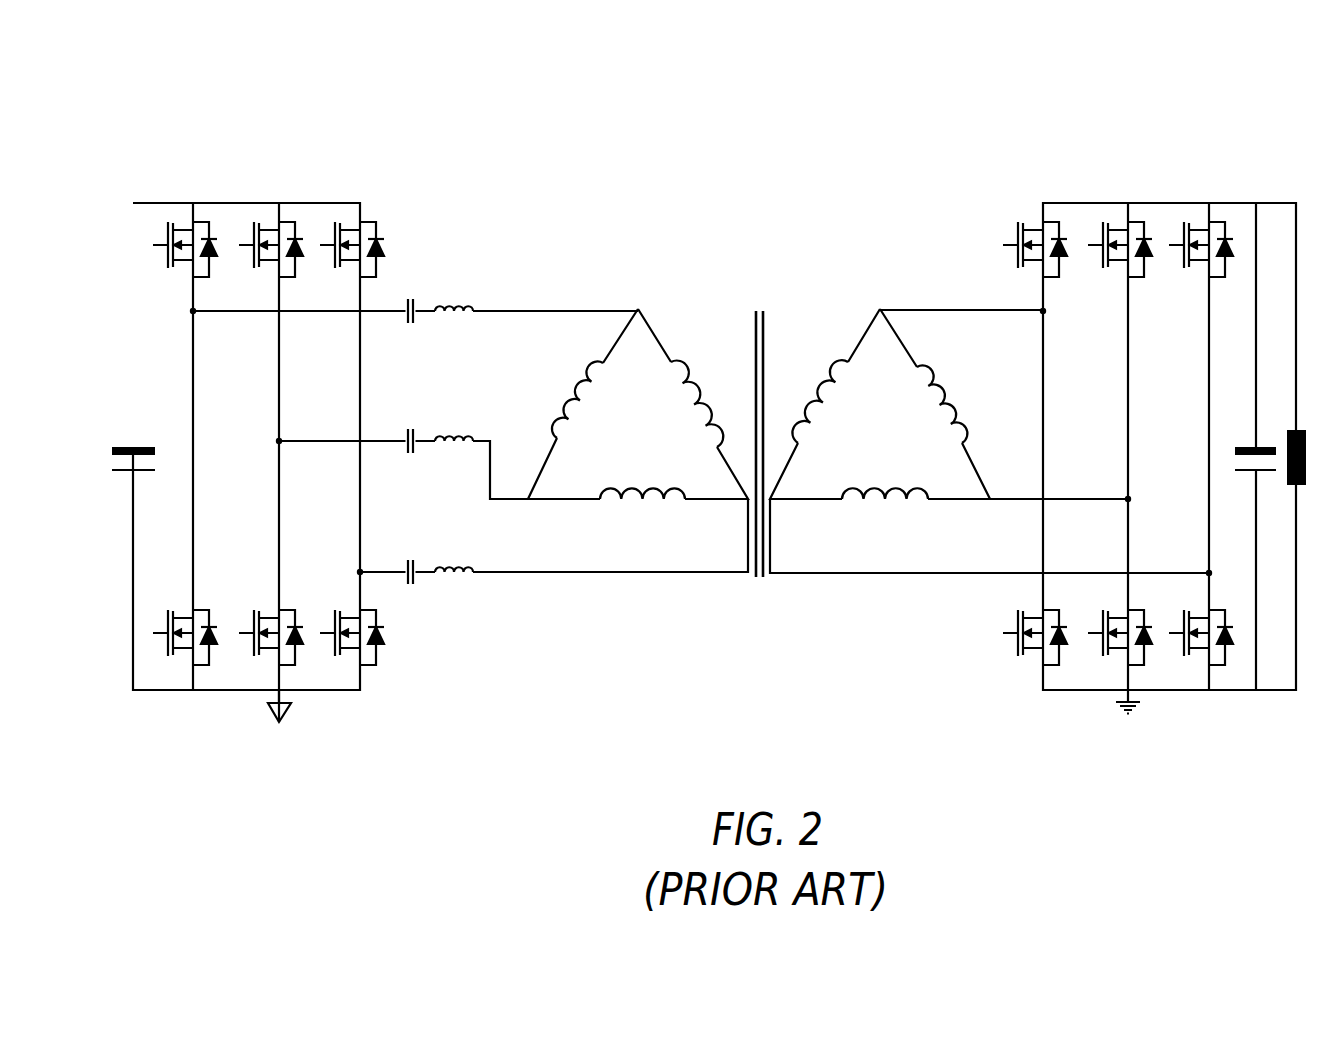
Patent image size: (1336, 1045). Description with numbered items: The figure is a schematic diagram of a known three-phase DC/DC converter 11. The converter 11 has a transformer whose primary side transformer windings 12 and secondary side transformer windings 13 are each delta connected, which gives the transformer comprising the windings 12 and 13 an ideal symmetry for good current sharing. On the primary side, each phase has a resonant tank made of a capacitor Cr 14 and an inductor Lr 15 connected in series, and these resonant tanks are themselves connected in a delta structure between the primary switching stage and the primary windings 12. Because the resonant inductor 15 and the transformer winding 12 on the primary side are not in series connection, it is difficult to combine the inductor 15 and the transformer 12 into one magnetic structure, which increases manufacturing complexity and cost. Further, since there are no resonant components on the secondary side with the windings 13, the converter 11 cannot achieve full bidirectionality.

The three-phase DC/DC converter 11 is at (196, 153).
The primary side transformer windings 12 is at (579, 389).
The secondary side transformer windings 13 is at (843, 362).
The capacitor Cr 14 is at (411, 318).
The inductor Lr 15 is at (449, 317).